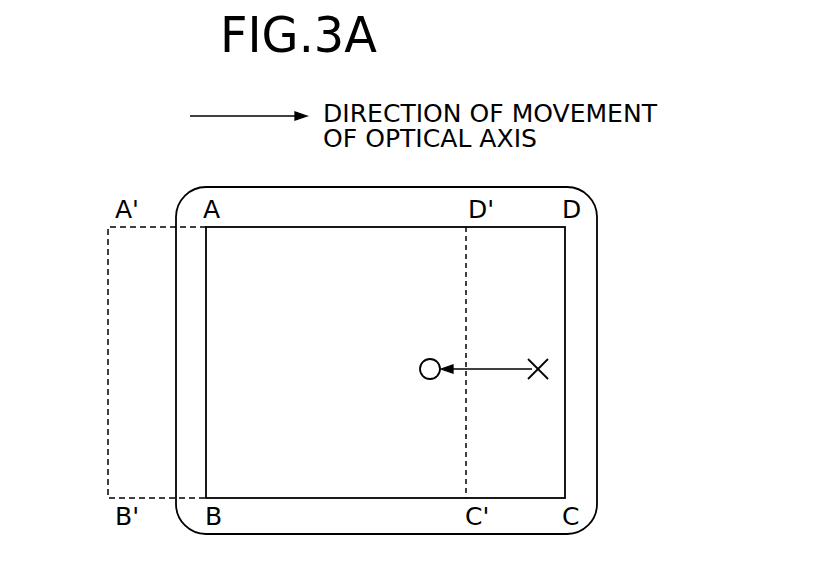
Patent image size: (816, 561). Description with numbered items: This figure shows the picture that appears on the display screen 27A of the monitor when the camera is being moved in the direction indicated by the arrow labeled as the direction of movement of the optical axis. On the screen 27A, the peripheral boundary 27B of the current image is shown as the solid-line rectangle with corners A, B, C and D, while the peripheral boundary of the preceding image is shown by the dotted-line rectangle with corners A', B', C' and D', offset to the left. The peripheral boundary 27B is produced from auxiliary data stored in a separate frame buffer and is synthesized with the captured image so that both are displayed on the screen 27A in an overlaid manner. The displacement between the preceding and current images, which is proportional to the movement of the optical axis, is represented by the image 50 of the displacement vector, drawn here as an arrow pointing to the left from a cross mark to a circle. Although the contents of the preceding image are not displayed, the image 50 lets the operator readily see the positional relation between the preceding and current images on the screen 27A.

The display screen 27A is at (598, 222).
The peripheral boundary 27B is at (565, 307).
The image of the displacement vector 50 is at (505, 371).